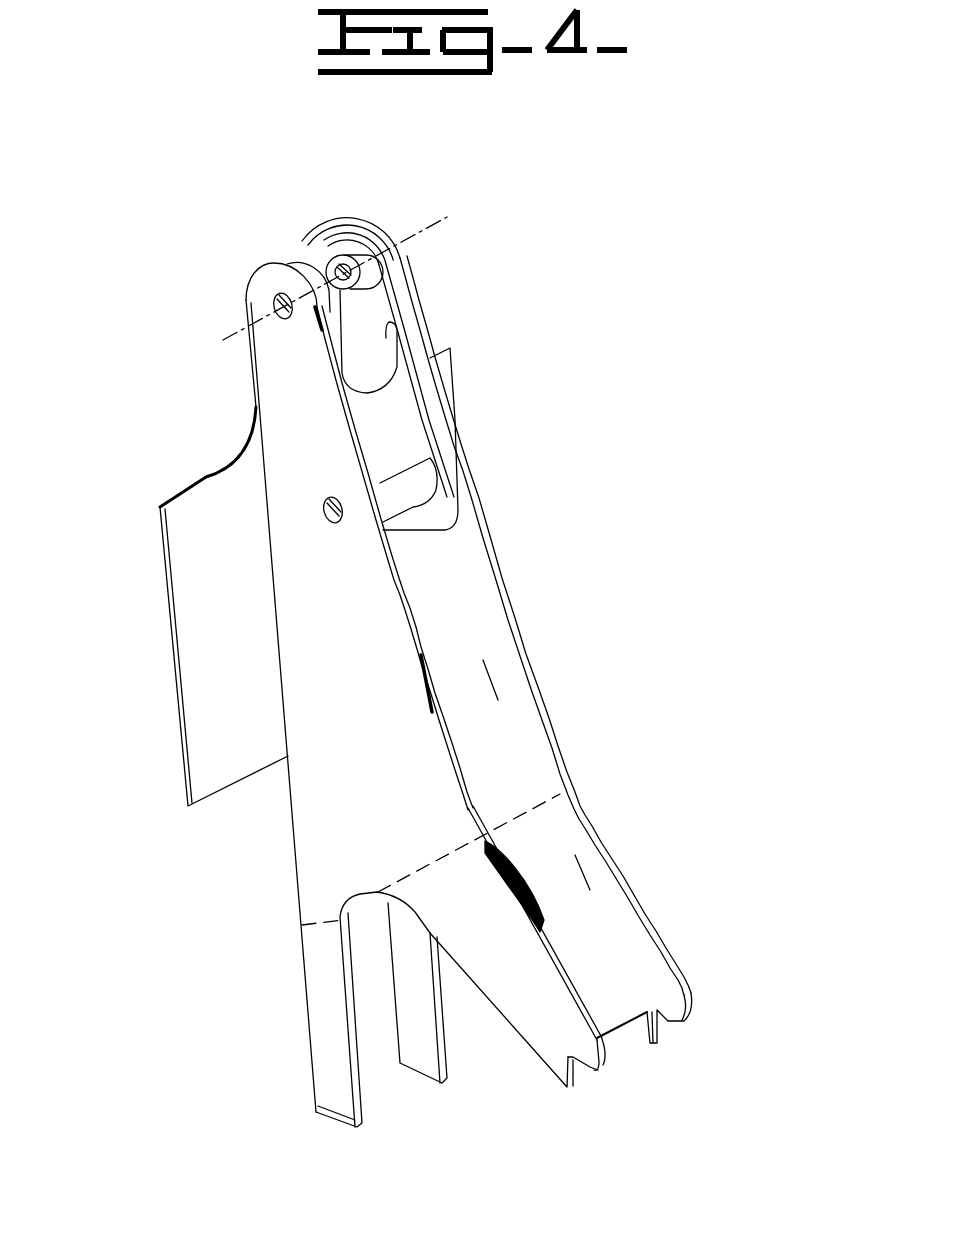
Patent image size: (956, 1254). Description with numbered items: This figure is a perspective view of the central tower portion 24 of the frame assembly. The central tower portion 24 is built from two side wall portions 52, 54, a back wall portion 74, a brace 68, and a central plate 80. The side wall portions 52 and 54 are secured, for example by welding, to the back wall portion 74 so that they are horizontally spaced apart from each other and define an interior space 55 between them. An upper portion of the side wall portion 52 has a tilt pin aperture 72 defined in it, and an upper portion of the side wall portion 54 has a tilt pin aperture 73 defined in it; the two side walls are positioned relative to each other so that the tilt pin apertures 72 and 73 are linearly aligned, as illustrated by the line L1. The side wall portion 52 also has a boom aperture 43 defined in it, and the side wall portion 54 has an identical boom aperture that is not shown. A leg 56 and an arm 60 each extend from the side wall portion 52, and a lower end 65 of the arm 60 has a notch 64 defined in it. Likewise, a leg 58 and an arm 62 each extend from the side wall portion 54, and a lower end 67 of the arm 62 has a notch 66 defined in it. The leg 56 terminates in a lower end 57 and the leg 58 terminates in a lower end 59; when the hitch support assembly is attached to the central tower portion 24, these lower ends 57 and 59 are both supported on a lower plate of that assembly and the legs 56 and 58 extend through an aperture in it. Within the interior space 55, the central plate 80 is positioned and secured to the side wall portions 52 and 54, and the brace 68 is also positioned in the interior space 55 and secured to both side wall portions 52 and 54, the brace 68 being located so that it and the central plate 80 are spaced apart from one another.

The central tower portion 24 is at (288, 231).
The line L1 is at (447, 221).
The boom aperture 43 is at (212, 553).
The side wall portion 52 is at (273, 701).
The side wall portion 54 is at (465, 573).
The interior space 55 is at (487, 652).
The leg 56 is at (323, 968).
The lower end 57 is at (334, 1120).
The leg 58 is at (415, 978).
The lower end 59 is at (398, 1056).
The arm 60 is at (499, 1077).
The arm 62 is at (588, 870).
The notch 64 is at (683, 1133).
The lower end 65 is at (744, 1114).
The notch 66 is at (668, 1013).
The lower end 67 is at (795, 1090).
The brace 68 is at (410, 437).
The tilt pin aperture 72 is at (250, 303).
The tilt pin aperture 73 is at (337, 250).
The back wall portion 74 is at (197, 550).
The central plate 80 is at (696, 984).